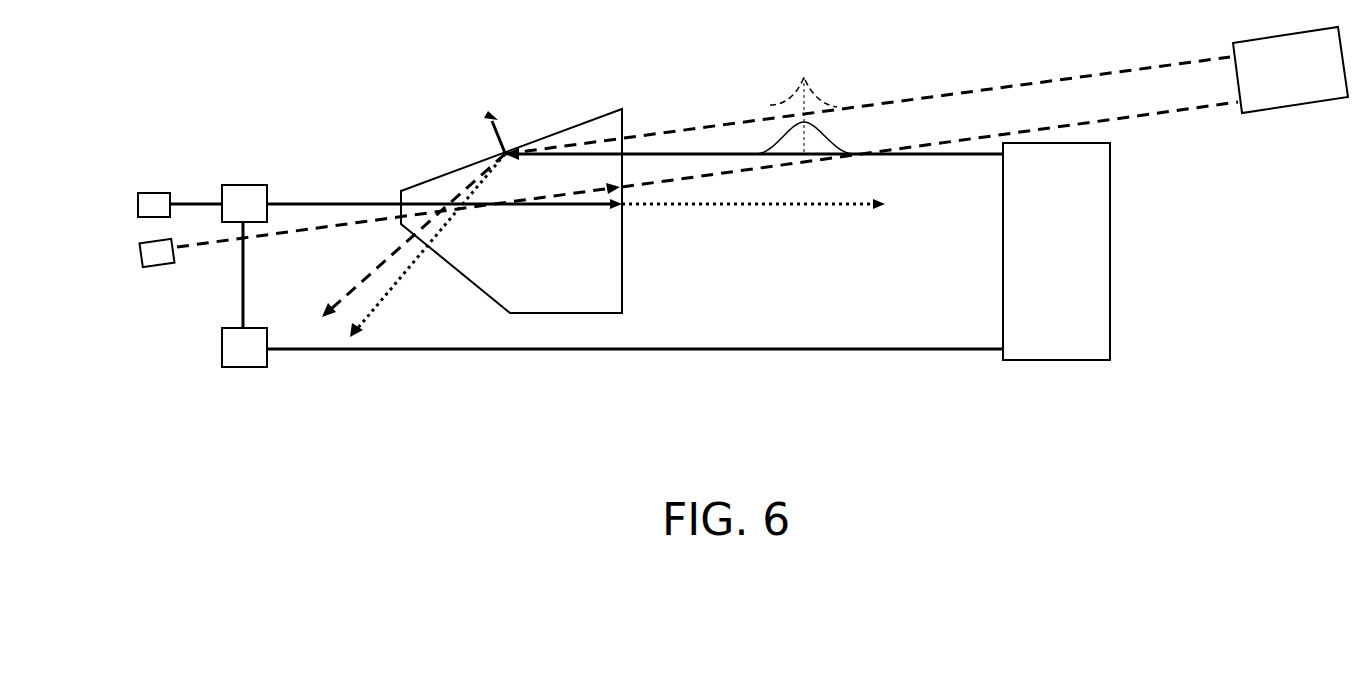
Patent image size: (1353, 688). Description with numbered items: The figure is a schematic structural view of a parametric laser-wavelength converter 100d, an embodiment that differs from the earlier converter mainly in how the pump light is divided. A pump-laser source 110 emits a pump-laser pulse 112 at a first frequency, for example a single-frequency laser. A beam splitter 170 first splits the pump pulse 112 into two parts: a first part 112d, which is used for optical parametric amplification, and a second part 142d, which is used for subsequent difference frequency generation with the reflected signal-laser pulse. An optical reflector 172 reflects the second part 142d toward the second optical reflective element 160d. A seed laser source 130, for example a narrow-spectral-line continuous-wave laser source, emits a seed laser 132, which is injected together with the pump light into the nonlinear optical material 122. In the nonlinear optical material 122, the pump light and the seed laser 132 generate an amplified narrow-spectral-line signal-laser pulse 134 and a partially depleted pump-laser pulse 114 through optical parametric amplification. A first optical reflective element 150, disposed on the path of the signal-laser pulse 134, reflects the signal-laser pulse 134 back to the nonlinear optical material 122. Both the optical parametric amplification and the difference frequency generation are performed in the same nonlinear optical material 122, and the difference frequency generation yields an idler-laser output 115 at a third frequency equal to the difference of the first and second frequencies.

The parametric laser-wavelength converter 100d is at (701, 200).
The pump-laser source 110 is at (138, 202).
The pump-laser pulse 112 is at (195, 202).
The first part 112d is at (308, 202).
The partially depleted pump-laser pulse 114 is at (660, 207).
The idler-laser output 115 is at (500, 148).
The nonlinear optical material 122 is at (565, 128).
The seed laser source 130 is at (140, 253).
The seed laser 132 is at (263, 233).
The signal-laser pulse 134 is at (1155, 115).
The second part 142d is at (242, 297).
The first optical reflective element 150 is at (1280, 33).
The second optical reflective element 160d is at (1110, 218).
The beam splitter 170 is at (247, 185).
The optical reflector 172 is at (250, 367).